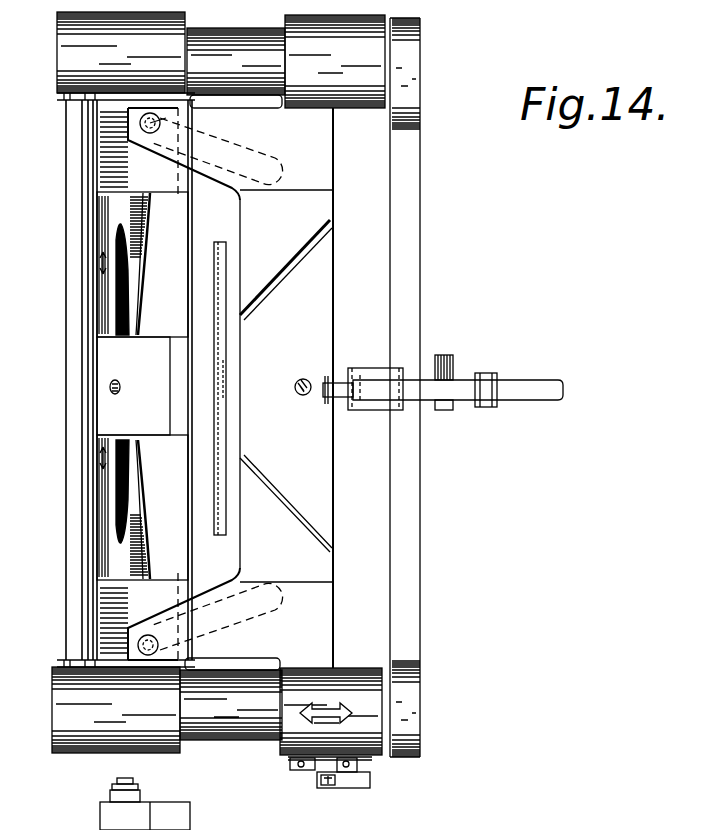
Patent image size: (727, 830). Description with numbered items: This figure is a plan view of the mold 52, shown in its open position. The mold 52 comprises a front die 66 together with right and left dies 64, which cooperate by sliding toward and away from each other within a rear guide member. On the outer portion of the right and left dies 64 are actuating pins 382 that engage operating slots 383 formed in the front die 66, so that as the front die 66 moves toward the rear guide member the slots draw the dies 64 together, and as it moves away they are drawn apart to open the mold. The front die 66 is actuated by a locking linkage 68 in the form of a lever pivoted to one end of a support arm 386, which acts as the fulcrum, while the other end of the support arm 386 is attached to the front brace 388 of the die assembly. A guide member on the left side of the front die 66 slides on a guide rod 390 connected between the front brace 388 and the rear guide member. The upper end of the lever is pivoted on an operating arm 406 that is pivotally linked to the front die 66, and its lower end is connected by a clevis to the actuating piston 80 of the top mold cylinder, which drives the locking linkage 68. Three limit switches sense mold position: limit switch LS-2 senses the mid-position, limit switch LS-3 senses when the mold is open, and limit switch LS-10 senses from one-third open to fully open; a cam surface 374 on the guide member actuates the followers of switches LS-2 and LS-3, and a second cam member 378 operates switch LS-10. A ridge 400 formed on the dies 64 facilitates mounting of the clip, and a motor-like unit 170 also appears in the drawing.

The mold 52 is at (63, 450).
The left and right dies 64 is at (110, 213).
The front die 66 is at (232, 343).
The locking linkage 68 is at (530, 376).
The actuating piston 80 is at (73, 343).
The motor 170 is at (177, 804).
The cam surface 374 is at (358, 762).
The switch housing 378 is at (355, 784).
The actuating pins 382 is at (200, 121).
The operating slots 383 is at (252, 156).
The support arm 386 is at (428, 364).
The front brace 388 is at (404, 193).
The guide rod 390 is at (232, 718).
The ridge 400 is at (125, 445).
The operating arm 406 is at (375, 395).
The limit switch LS-2 is at (300, 772).
The limit switch LS-3 is at (358, 772).
The limit switch LS-10 is at (326, 788).